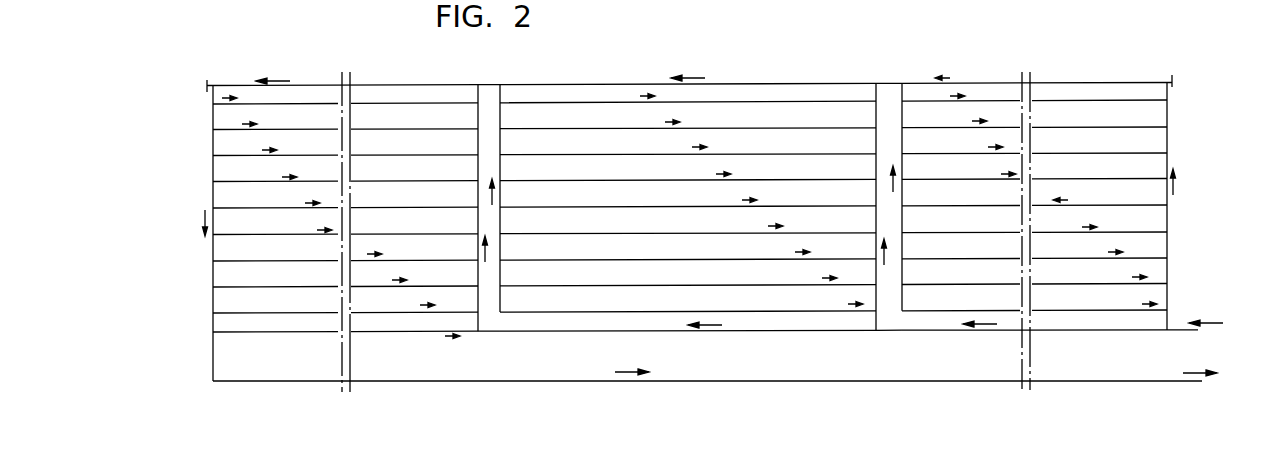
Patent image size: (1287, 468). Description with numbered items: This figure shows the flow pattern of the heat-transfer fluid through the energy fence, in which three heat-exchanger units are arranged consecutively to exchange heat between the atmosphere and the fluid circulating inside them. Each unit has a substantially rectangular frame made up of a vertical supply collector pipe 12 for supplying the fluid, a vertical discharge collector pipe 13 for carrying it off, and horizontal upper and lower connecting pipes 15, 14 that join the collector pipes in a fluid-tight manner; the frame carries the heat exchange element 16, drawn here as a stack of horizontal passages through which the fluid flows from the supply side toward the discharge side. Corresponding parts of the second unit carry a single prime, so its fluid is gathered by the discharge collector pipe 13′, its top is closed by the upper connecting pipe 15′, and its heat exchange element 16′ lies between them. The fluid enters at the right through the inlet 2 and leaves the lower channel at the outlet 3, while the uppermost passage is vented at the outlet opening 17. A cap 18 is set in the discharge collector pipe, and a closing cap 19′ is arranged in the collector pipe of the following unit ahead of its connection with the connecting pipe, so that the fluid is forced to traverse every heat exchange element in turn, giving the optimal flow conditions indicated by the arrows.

The inlet 2 is at (1180, 330).
The outlet 3 is at (1120, 382).
The supply collector pipe 12 is at (1170, 215).
The discharge collector pipe 13 is at (897, 115).
The discharge collector pipe 13′ is at (503, 93).
The lower connecting pipe 14 is at (752, 333).
The upper connecting pipe 15 is at (990, 80).
The upper connecting pipe 15′ is at (750, 82).
The heat exchange element 16 is at (1093, 150).
The heat exchange element 16′ is at (613, 154).
The outlet opening 17 is at (1168, 92).
The cap 18 is at (503, 321).
The closing cap 19′ is at (873, 93).